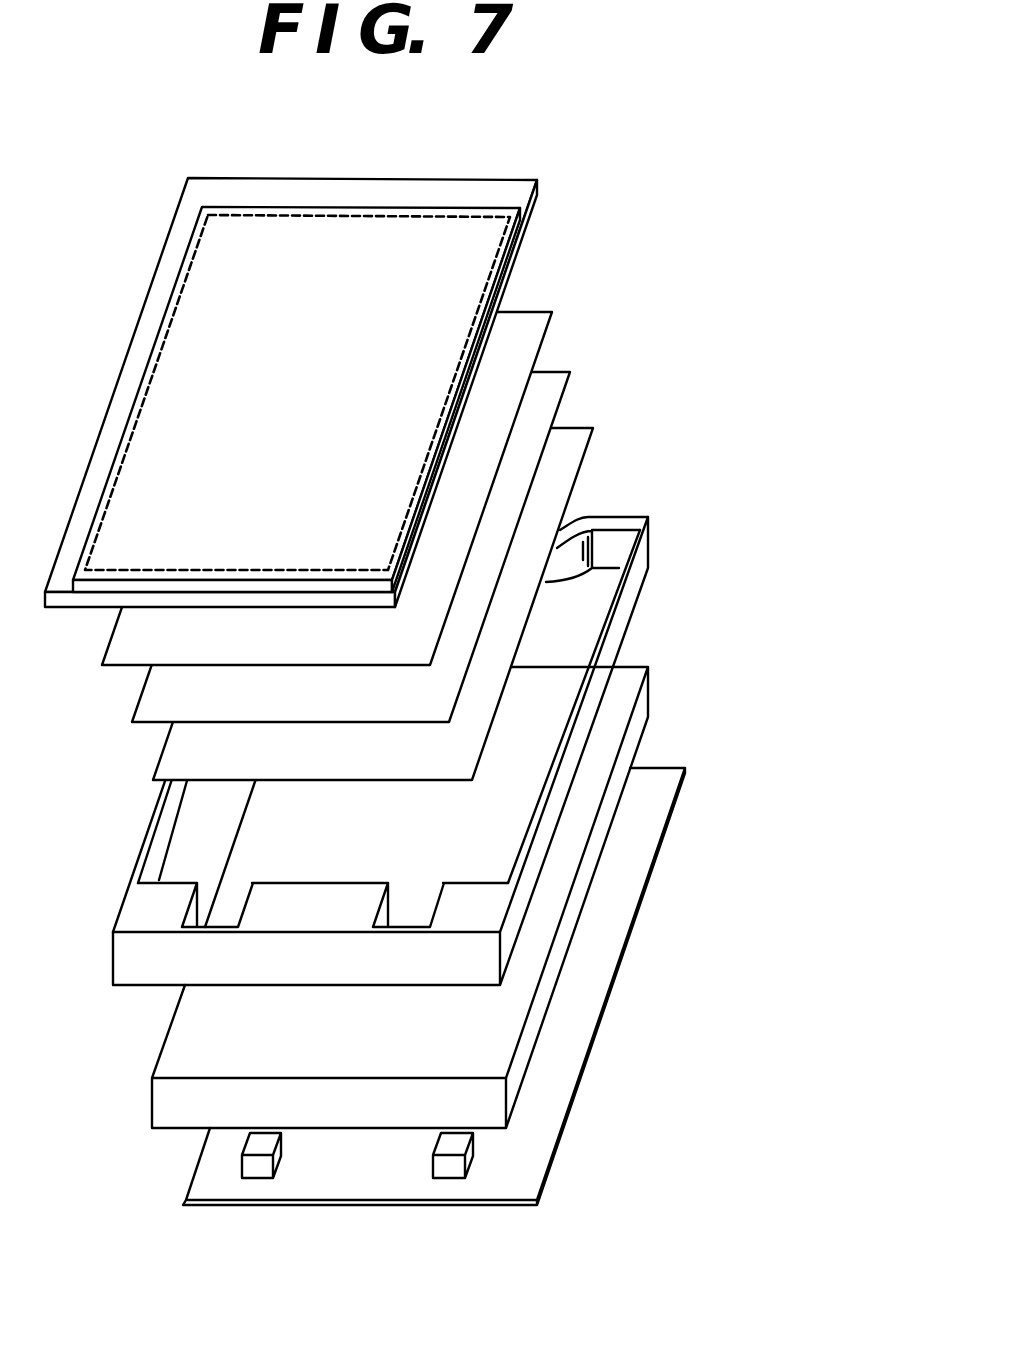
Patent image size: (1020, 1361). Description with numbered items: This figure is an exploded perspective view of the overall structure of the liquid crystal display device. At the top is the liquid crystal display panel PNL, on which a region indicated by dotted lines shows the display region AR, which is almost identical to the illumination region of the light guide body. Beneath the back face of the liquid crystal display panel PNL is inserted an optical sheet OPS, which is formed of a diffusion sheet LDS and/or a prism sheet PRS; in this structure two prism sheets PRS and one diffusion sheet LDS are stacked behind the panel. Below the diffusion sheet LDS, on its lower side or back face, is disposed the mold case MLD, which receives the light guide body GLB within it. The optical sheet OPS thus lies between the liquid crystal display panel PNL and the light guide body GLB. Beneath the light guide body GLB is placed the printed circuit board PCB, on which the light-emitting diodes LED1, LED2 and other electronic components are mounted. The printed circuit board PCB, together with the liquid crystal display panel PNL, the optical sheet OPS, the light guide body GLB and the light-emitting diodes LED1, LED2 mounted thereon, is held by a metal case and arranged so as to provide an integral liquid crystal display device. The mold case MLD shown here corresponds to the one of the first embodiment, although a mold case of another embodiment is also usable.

The liquid crystal display panel PNL is at (340, 392).
The display region AR is at (310, 378).
The prism sheet PRS is at (592, 295).
The diffusion sheet LDS is at (598, 436).
The optical sheet OPS is at (449, 537).
The mold case MLD is at (616, 639).
The printed circuit board PCB is at (667, 800).
The light guide body GLB is at (552, 903).
The light-emitting diode LED1 is at (255, 1172).
The light-emitting diode LED2 is at (448, 1172).